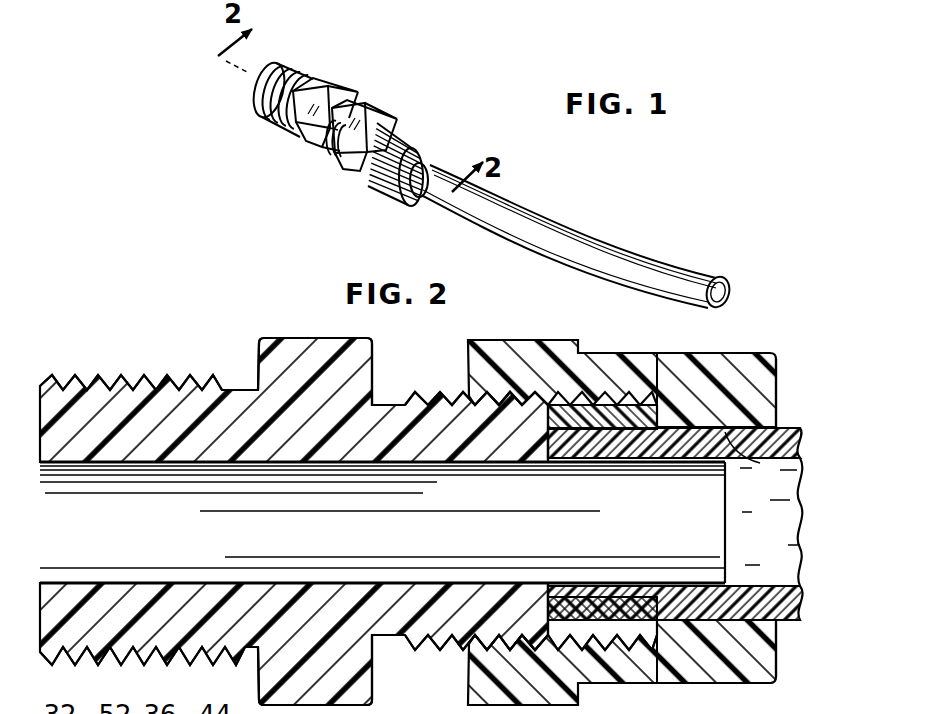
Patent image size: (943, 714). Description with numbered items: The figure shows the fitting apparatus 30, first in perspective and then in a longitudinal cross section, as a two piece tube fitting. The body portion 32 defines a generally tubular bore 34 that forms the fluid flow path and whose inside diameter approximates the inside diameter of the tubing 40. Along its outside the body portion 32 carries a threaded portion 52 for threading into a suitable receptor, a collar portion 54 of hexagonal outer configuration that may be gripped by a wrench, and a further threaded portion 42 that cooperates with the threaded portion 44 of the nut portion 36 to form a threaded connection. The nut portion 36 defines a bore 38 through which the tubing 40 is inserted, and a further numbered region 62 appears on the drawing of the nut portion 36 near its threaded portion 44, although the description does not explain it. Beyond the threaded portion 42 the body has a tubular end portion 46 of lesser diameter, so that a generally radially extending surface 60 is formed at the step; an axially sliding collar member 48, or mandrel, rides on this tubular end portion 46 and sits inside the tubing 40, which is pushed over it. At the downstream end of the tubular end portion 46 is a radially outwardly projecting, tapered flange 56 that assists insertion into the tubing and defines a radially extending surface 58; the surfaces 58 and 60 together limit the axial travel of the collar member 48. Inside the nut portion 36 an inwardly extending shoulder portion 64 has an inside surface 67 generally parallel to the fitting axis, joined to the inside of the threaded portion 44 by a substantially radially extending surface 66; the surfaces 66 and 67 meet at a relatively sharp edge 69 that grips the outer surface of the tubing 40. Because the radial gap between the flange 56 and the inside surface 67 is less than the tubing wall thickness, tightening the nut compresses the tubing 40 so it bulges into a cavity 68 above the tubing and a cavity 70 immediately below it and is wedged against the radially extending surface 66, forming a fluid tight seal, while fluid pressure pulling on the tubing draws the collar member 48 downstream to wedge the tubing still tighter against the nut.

In FIG. 1, the fitting apparatus 30 is at (405, 88).
In FIG. 2, the fitting apparatus 30 is at (240, 330).
In FIG. 1, the body portion 32 is at (275, 127).
In FIG. 2, the body portion 32 is at (125, 372).
In FIG. 2, the bore 34 is at (158, 536).
In FIG. 1, the nut portion 36 is at (428, 137).
In FIG. 2, the nut portion 36 is at (605, 374).
In FIG. 1, the bore 38 is at (423, 196).
In FIG. 2, the bore 38 is at (768, 445).
In FIG. 1, the tubing 40 is at (580, 240).
In FIG. 2, the tubing 40 is at (675, 571).
In FIG. 1, the threaded portion 42 is at (327, 140).
In FIG. 2, the threaded portion 42 is at (438, 398).
In FIG. 2, the threaded portion 44 is at (476, 432).
In FIG. 2, the tubular end portion 46 is at (592, 592).
In FIG. 2, the collar member 48 is at (595, 452).
In FIG. 1, the threaded portion 52 is at (268, 113).
In FIG. 2, the threaded portion 52 is at (76, 376).
In FIG. 1, the collar portion 54 is at (298, 143).
In FIG. 2, the collar portion 54 is at (295, 348).
In FIG. 2, the flange 56 is at (672, 603).
In FIG. 2, the radially extending surface 58 is at (678, 453).
In FIG. 2, the radially extending surface 60 is at (553, 446).
In FIG. 2, the nut internal threads 62 is at (612, 665).
In FIG. 2, the shoulder portion 64 is at (730, 420).
In FIG. 2, the radially extending surface 66 is at (640, 392).
In FIG. 2, the inside surface 67 is at (770, 516).
In FIG. 2, the cavity 68 is at (650, 632).
In FIG. 2, the sharp edge 69 is at (641, 448).
In FIG. 2, the cavity 70 is at (655, 610).